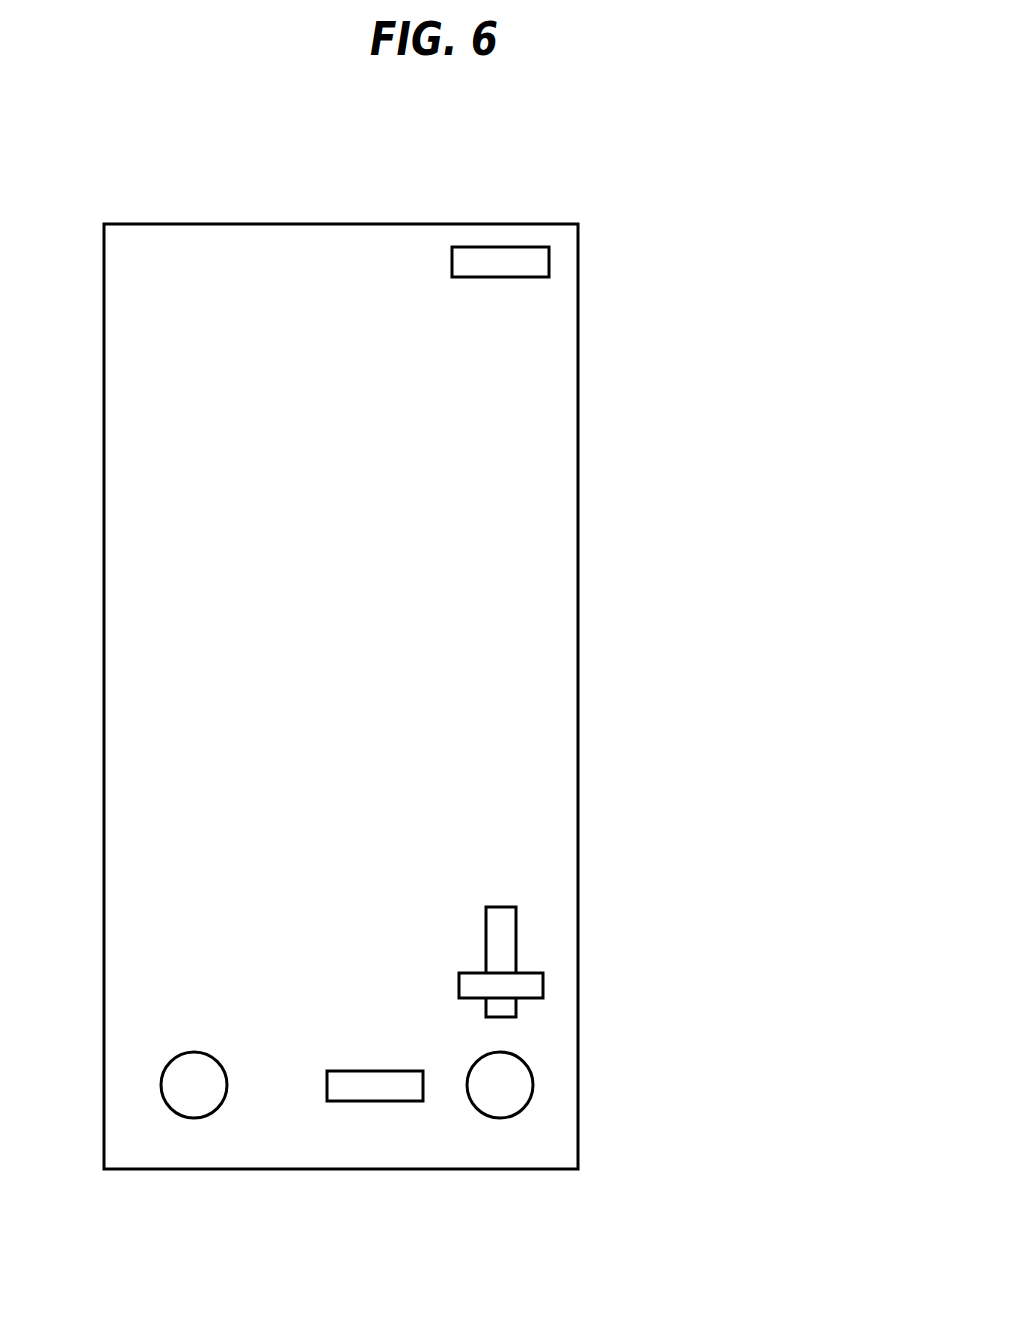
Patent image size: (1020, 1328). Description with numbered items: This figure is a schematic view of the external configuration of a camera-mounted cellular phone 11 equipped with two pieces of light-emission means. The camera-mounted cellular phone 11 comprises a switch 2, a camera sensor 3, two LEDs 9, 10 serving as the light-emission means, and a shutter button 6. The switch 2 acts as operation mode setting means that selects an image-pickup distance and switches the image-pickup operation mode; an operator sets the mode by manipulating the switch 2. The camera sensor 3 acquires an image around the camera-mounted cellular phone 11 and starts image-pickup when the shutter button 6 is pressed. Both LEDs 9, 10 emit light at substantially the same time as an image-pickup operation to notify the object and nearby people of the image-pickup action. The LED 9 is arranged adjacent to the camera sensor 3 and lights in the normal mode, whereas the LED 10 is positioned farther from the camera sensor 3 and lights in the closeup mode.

The camera-mounted cellular phone 11 is at (203, 224).
The LED 10 is at (530, 262).
The switch 2 is at (530, 984).
The camera sensor 3 is at (512, 1084).
The shutter button 6 is at (194, 1105).
The LED 9 is at (376, 1085).